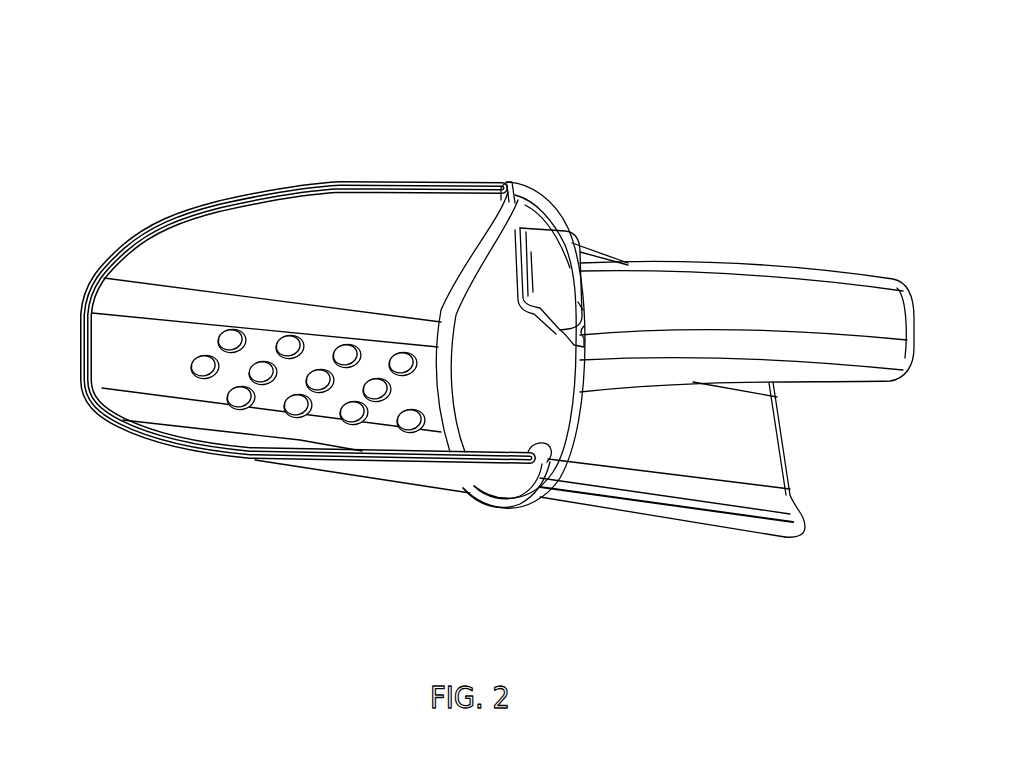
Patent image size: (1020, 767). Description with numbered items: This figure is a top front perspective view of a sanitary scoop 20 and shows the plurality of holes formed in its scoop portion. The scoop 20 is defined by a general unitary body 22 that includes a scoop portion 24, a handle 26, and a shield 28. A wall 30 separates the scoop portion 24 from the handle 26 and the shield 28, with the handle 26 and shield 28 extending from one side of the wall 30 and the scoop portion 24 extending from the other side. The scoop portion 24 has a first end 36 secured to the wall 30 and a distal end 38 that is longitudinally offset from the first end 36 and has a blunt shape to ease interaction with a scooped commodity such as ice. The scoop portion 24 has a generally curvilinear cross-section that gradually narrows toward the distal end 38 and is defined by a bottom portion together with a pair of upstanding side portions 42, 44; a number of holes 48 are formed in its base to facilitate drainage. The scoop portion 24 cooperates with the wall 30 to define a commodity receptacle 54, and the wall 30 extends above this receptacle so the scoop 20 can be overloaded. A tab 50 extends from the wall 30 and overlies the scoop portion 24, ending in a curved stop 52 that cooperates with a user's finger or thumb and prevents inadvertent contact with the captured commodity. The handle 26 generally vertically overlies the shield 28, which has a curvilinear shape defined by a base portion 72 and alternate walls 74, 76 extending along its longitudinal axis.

The scoop 20 is at (770, 104).
The unitary body 22 is at (525, 205).
The scoop portion 24 is at (373, 470).
The handle 26 is at (747, 284).
The shield 28 is at (678, 520).
The wall 30 is at (572, 422).
The first end 36 is at (497, 492).
The distal end 38 is at (80, 352).
The side portion 42 is at (327, 467).
The side portion 44 is at (322, 222).
The holes 48 is at (190, 362).
The tab 50 is at (553, 257).
The stop 52 is at (505, 195).
The commodity receptacle 54 is at (392, 228).
The base portion 72 is at (768, 444).
The alternate wall 74 is at (765, 535).
The alternate wall 76 is at (603, 255).